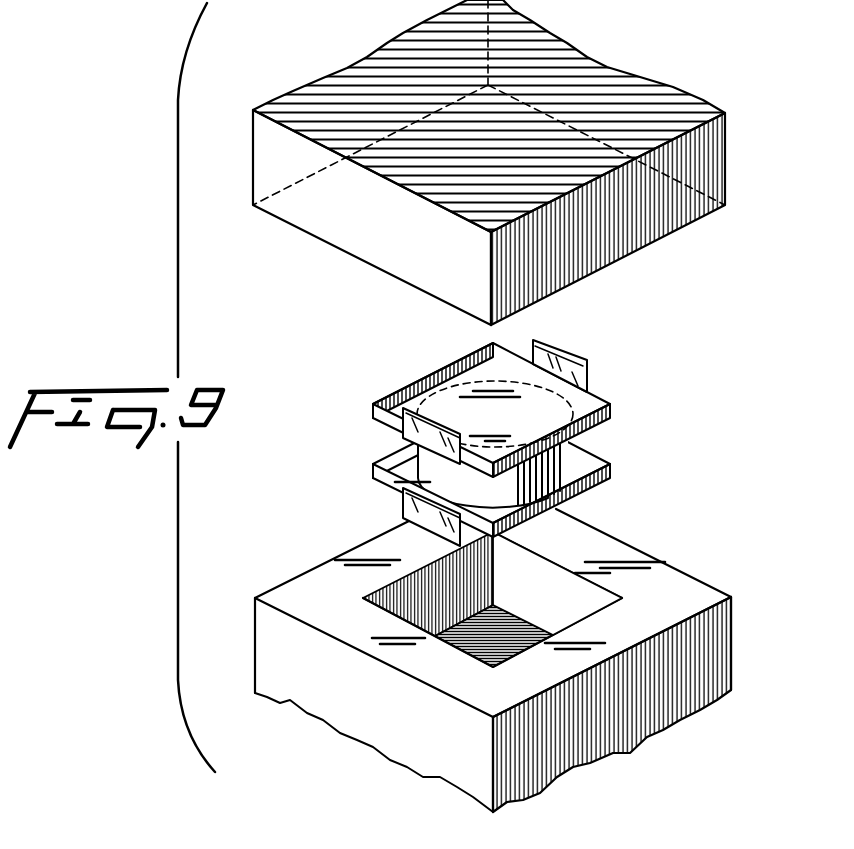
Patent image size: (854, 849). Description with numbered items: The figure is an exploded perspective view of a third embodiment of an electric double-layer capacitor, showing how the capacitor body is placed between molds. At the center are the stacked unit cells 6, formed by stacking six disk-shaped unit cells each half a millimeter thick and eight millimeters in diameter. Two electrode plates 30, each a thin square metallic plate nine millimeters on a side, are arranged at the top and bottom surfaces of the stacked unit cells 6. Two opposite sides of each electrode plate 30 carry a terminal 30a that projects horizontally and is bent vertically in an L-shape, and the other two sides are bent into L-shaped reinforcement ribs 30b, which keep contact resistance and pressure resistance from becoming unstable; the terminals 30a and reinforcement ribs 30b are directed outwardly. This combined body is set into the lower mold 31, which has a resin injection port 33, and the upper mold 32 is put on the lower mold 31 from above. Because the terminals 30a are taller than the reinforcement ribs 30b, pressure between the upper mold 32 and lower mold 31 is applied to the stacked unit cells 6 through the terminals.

The stacked unit cells 6 is at (438, 476).
The electrode plate 30 is at (496, 440).
The terminal 30a is at (560, 349).
The reinforcement rib 30b is at (433, 373).
The lower mold 31 is at (650, 713).
The upper mold 32 is at (592, 72).
The resin injection port 33 is at (565, 603).